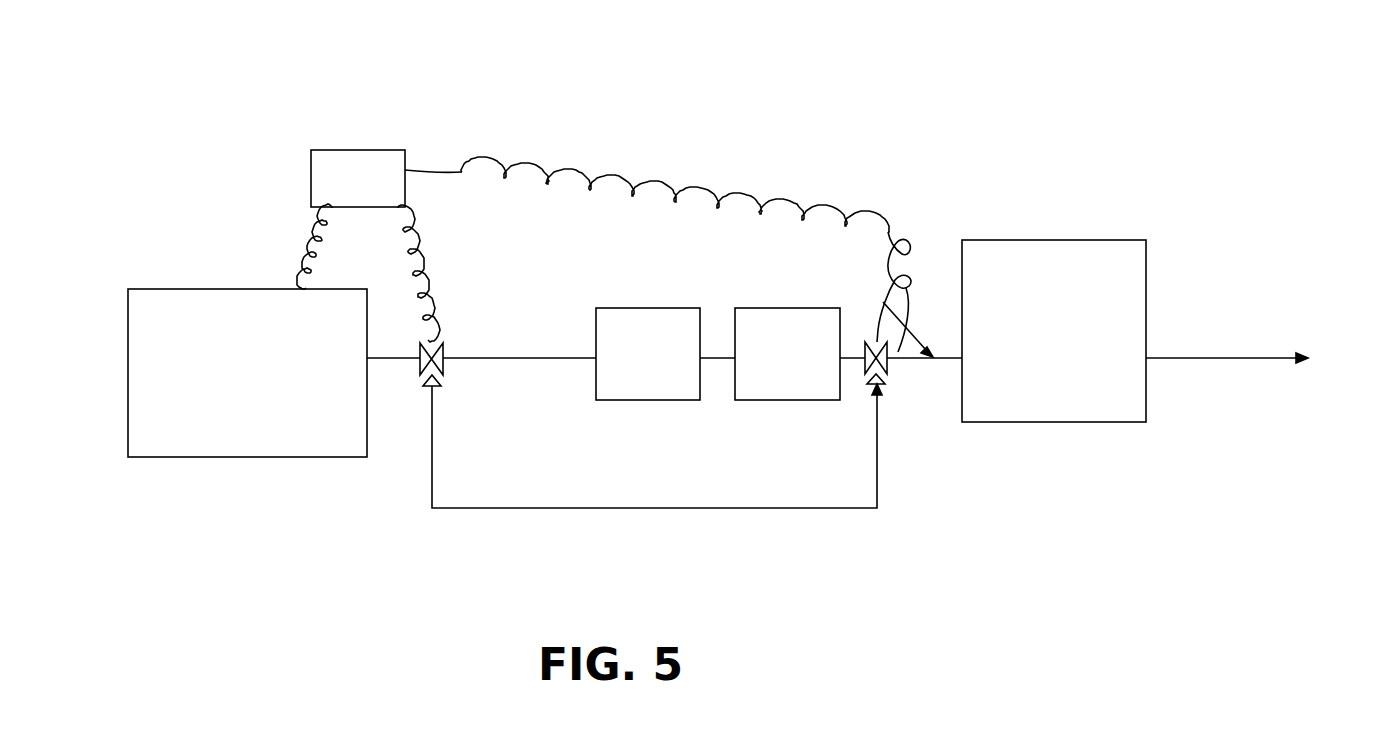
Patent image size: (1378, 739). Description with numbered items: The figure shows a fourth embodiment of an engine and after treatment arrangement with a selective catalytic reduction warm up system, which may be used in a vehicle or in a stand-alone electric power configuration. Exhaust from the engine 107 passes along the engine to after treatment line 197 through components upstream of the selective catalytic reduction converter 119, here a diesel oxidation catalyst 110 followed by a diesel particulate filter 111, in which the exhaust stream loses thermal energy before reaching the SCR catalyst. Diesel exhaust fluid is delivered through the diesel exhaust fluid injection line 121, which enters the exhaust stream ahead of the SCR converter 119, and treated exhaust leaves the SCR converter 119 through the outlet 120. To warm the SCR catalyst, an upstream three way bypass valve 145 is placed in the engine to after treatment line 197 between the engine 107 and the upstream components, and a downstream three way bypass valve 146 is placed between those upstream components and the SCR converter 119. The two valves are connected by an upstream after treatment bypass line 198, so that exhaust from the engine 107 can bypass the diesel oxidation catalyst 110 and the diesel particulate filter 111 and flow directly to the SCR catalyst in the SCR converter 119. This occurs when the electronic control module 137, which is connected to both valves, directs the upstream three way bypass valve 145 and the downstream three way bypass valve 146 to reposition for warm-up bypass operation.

The engine 107 is at (160, 289).
The electronic control module 137 is at (385, 150).
The engine to after treatment line 197 is at (374, 368).
The upstream three way bypass valve 145 is at (426, 386).
The downstream three way bypass valve 146 is at (890, 378).
The upstream after treatment bypass line 198 is at (800, 516).
The diesel oxidation catalyst 110 is at (640, 308).
The diesel particulate filter 111 is at (768, 308).
The diesel exhaust fluid injection line 121 is at (890, 272).
The selective catalytic reduction converter 119 is at (1112, 240).
The exhaust outlet 120 is at (1252, 359).